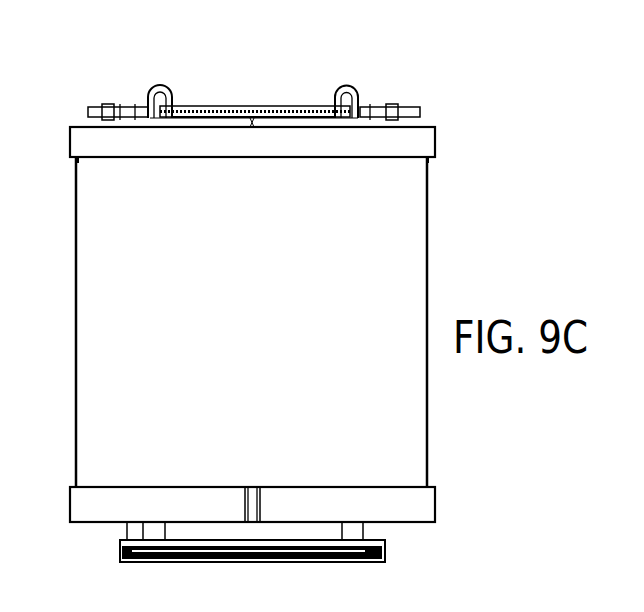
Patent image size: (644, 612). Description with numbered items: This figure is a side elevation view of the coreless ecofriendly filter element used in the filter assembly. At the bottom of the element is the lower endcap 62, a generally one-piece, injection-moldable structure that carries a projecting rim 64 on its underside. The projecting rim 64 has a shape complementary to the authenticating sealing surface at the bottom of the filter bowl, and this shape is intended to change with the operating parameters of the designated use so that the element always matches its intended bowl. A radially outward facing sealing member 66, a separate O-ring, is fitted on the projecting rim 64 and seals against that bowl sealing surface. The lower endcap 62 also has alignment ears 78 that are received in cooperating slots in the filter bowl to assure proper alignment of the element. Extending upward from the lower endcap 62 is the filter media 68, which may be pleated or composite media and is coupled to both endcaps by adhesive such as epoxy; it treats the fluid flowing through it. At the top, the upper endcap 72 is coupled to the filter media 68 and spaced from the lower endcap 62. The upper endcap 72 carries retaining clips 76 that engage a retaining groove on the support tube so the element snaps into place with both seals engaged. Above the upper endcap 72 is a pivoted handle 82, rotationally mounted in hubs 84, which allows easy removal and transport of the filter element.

The lower endcap 62 is at (428, 522).
The projecting rim 64 is at (323, 562).
The sealing member 66 is at (383, 553).
The filter media 68 is at (405, 285).
The upper endcap 72 is at (430, 134).
The retaining clips 76 is at (162, 90).
The alignment ears 78 is at (245, 498).
The pivoted handle 82 is at (282, 106).
The hubs 84 is at (112, 104).